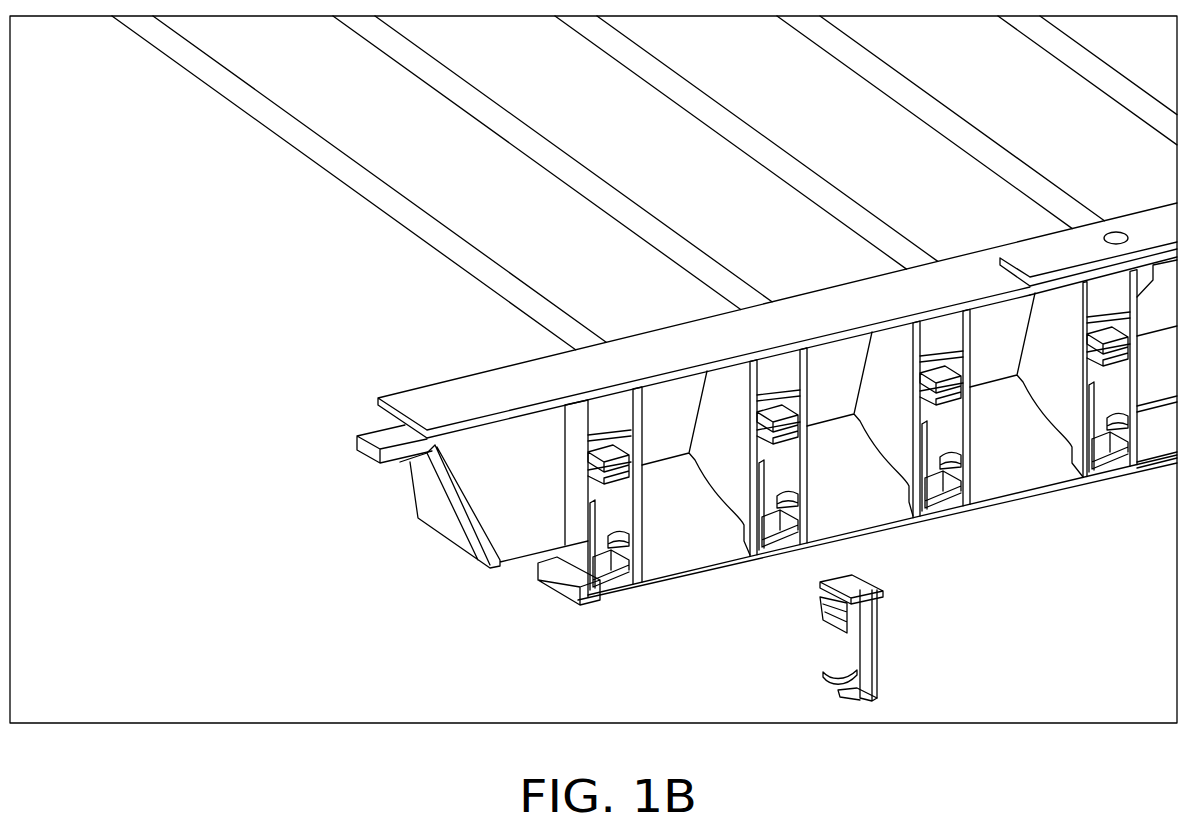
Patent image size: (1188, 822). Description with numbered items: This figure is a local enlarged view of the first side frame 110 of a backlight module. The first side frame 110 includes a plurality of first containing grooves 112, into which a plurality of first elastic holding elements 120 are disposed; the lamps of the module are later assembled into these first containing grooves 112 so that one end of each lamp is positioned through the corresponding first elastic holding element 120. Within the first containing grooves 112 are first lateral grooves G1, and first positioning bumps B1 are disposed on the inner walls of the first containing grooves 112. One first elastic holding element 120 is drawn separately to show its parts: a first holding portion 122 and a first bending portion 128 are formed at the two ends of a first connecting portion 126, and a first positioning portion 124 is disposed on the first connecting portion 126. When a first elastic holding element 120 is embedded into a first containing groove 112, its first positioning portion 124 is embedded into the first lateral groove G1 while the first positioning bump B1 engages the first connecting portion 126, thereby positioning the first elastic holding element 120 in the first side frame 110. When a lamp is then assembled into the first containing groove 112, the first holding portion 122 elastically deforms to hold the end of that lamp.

The first side frame 110 is at (410, 477).
The first containing grooves 112 is at (777, 538).
The first elastic holding elements 120 is at (793, 644).
The first holding portion 122 is at (822, 610).
The first positioning portion 124 is at (825, 578).
The first connecting portion 126 is at (850, 643).
The first bending portion 128 is at (816, 696).
The first lateral grooves G1 is at (797, 441).
The first positioning bumps B1 is at (798, 499).